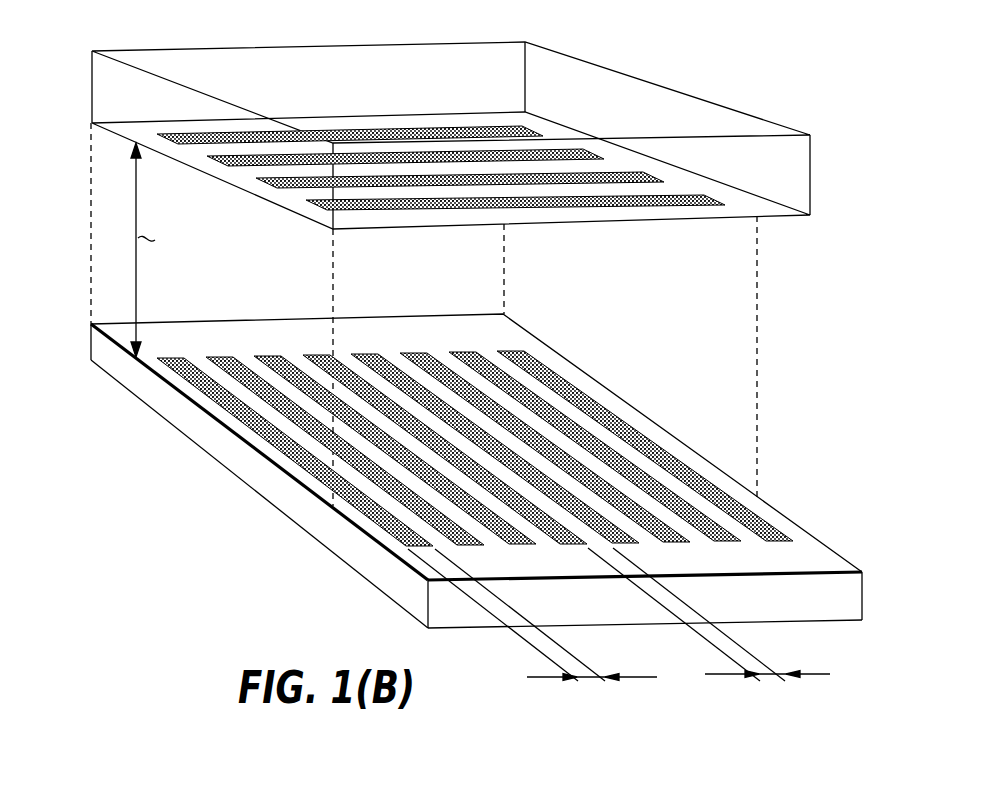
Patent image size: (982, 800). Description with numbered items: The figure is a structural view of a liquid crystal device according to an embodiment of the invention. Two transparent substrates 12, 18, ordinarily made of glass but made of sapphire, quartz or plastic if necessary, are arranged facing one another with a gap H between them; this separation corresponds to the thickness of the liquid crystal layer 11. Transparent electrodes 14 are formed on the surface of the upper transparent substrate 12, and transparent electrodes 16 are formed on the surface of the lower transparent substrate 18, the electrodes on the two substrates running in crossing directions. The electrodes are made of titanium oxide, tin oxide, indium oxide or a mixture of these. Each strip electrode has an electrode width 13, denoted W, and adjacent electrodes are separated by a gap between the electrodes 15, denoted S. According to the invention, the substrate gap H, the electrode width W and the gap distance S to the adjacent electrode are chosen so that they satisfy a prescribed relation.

The thickness of liquid crystal layer 11 is at (453, 396).
The transparent substrate 12 is at (810, 172).
The width of the electrode 13 is at (600, 678).
The transparent electrodes 14 is at (685, 205).
The gap between the electrodes 15 is at (777, 677).
The transparent electrodes 16 is at (715, 487).
The transparent substrate 18 is at (825, 543).